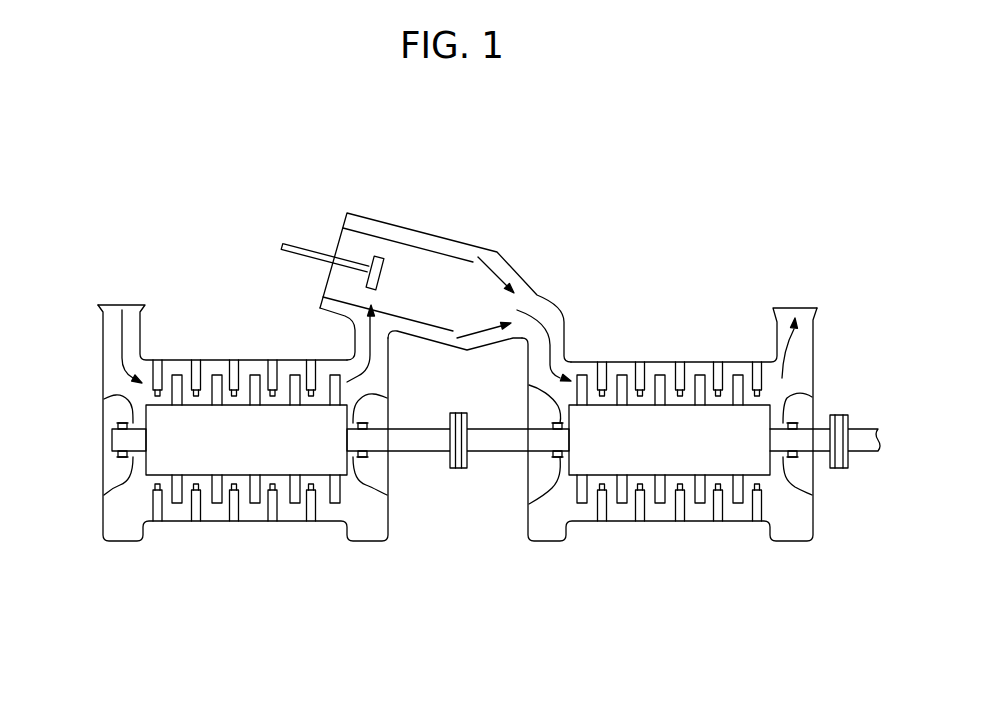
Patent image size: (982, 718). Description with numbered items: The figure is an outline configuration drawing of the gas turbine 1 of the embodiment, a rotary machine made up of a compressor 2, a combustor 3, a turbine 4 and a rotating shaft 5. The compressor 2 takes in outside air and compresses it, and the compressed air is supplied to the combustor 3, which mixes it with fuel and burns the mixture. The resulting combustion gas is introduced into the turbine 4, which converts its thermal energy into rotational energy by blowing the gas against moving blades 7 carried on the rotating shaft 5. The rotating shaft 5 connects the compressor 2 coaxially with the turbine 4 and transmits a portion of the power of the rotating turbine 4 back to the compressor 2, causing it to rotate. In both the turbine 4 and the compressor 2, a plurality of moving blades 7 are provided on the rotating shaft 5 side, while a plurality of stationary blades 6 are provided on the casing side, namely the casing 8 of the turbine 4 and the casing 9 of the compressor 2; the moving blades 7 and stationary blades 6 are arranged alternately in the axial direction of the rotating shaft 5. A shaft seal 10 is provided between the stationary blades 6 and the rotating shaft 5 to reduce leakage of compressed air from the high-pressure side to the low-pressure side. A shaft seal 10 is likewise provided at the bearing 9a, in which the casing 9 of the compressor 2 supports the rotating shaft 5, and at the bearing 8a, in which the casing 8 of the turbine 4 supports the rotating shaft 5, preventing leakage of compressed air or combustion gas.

The gas turbine 1 is at (767, 239).
The compressor 2 is at (390, 567).
The combustor 3 is at (333, 191).
The turbine 4 is at (812, 567).
The rotating shaft 5 is at (480, 453).
The stationary blades 6 is at (236, 372).
The moving blades 7 is at (217, 378).
The casing 8 is at (628, 522).
The bearing 8a is at (544, 491).
The casing 9 is at (207, 522).
The bearing 9a is at (104, 399).
The shaft seal 10 is at (118, 457).